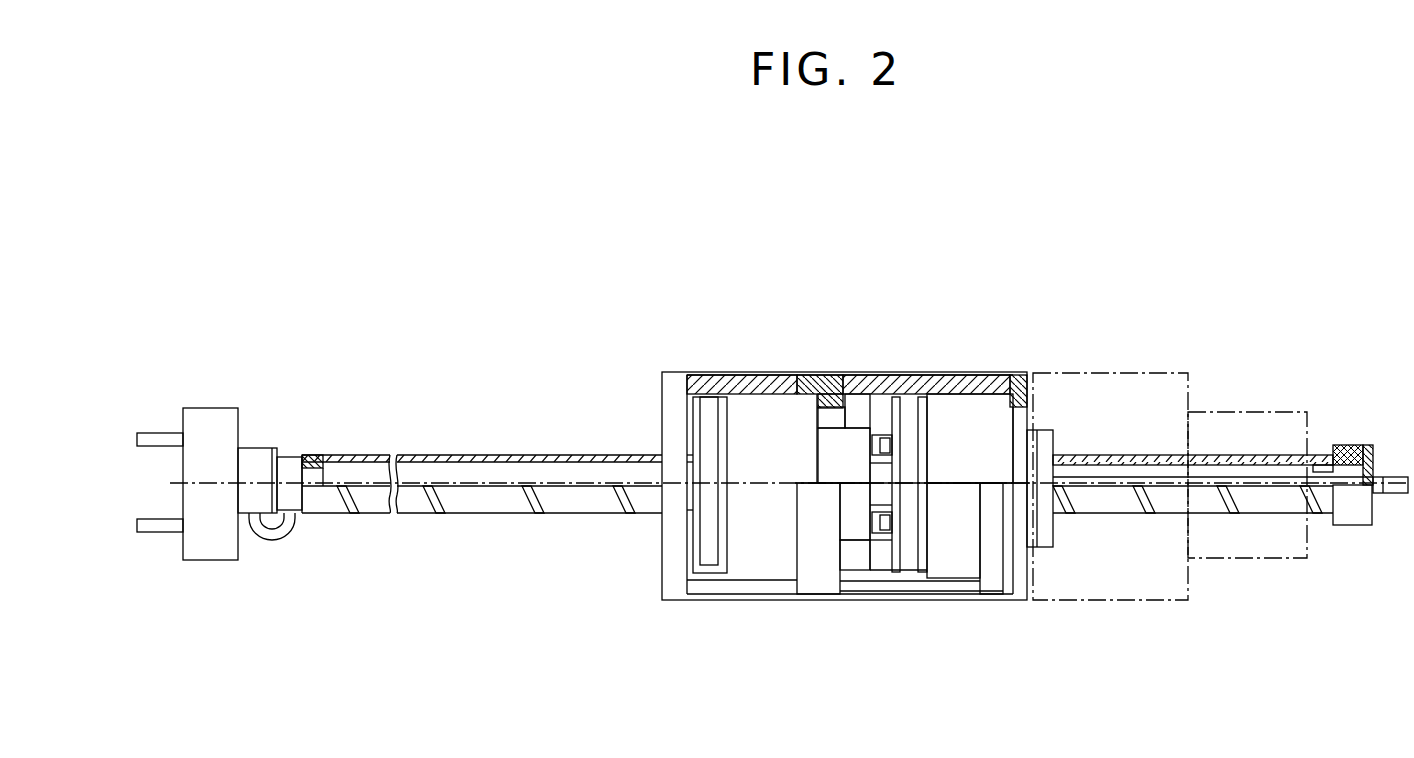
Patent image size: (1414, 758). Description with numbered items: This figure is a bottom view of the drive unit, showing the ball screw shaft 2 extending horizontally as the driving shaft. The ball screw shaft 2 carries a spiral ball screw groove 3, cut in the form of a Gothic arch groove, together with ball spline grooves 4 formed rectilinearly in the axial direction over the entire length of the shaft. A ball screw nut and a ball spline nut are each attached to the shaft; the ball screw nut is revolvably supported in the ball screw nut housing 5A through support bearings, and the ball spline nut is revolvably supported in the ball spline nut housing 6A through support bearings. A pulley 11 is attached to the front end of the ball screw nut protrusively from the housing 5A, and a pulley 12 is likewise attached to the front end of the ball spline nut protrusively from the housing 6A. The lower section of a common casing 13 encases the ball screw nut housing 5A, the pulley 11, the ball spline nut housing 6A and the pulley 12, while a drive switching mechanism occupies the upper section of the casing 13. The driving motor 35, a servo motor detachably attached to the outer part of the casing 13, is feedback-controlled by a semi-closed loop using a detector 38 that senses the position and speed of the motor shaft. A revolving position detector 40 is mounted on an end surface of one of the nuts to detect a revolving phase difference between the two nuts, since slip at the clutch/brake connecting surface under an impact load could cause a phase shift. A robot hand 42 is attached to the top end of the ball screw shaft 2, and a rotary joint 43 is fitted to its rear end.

The ball screw shaft 2 is at (360, 453).
The ball screw groove 3 is at (430, 497).
The ball spline grooves 4 is at (557, 493).
The ball screw nut housing 5A is at (963, 565).
The ball spline nut housing 6A is at (757, 562).
The pulley 11 is at (905, 410).
The pulley 12 is at (709, 410).
The casing 13 is at (670, 547).
The driving motor 35 is at (1137, 383).
The detector 38 is at (1273, 420).
The revolving position detector 40 is at (880, 562).
The robot hand 42 is at (223, 407).
The rotary joint 43 is at (1357, 510).